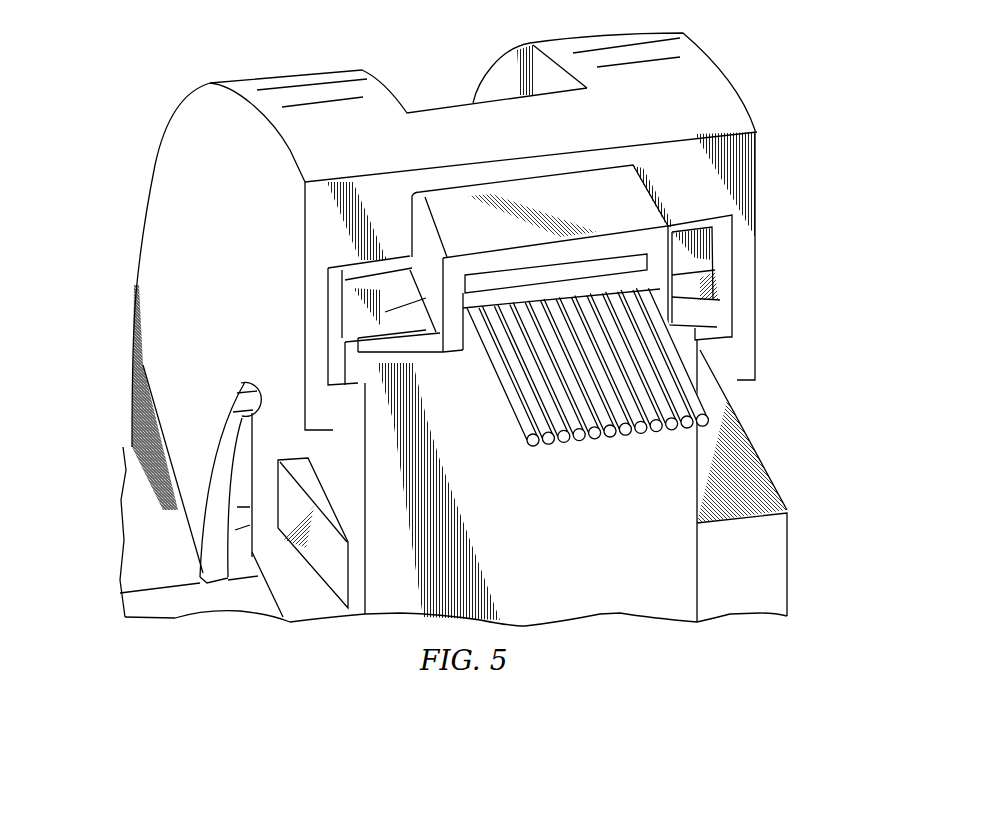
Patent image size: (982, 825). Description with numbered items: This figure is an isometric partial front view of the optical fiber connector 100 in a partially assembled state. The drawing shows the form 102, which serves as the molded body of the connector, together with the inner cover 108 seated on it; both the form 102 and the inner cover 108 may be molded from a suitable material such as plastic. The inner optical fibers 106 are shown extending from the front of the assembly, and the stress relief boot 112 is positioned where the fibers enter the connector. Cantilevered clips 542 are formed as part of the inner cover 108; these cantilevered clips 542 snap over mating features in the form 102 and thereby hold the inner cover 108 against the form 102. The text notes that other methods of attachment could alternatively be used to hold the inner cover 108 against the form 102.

The optical fiber connector 100 is at (110, 205).
The form 102 is at (787, 563).
The inner optical fibers 106 is at (610, 441).
The inner cover 108 is at (722, 105).
The stress relief boot 112 is at (634, 217).
The cantilevered clips 542 is at (737, 372).